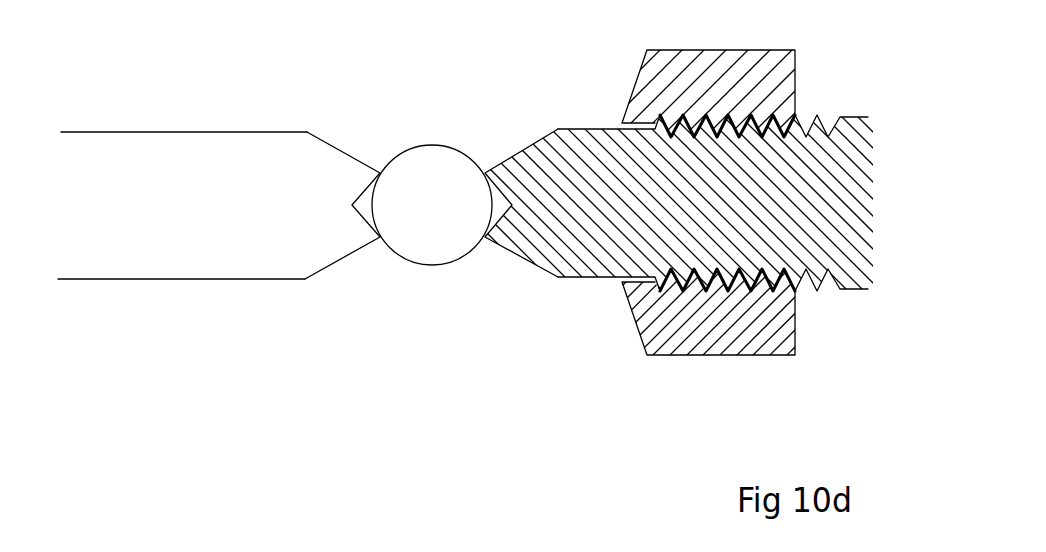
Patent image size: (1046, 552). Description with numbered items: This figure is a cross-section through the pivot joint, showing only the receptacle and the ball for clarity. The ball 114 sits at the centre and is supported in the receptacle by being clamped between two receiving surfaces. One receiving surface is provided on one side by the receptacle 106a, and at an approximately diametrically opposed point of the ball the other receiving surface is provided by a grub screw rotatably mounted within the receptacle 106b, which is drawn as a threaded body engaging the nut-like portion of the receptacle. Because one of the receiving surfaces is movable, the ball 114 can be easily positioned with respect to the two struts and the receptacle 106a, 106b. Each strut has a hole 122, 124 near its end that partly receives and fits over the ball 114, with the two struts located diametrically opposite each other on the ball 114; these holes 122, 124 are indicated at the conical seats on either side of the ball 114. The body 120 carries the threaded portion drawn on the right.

The receptacle 106a is at (219, 207).
The receptacle 106b is at (645, 352).
The ball 114 is at (412, 262).
The threaded fitting body 120 is at (696, 211).
The hole 122 is at (342, 148).
The hole 124 is at (523, 150).